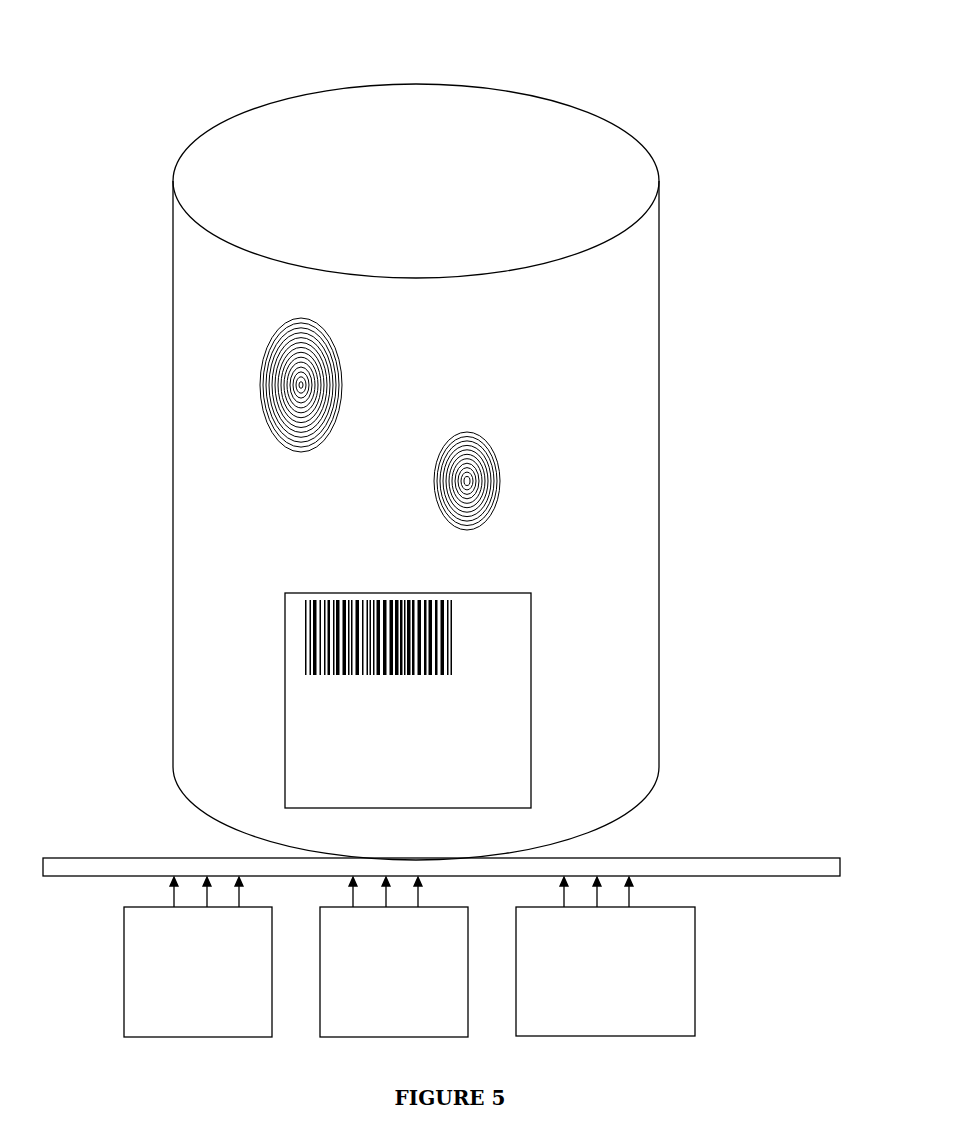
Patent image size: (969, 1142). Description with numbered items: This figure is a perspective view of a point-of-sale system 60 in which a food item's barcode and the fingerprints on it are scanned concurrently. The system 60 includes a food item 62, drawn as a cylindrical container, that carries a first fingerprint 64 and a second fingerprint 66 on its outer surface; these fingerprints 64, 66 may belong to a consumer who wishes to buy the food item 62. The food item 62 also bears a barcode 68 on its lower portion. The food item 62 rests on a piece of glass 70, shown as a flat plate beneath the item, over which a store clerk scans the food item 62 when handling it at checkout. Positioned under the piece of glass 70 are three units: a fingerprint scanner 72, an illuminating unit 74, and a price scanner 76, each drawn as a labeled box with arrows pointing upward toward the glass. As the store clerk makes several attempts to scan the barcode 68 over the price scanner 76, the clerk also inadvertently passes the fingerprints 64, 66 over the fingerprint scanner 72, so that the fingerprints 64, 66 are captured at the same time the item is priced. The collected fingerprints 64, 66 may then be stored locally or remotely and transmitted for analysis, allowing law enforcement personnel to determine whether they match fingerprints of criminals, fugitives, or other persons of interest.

The system 60 is at (570, 67).
The food item 62 is at (642, 328).
The first fingerprint 64 is at (255, 389).
The second fingerprint 66 is at (498, 502).
The barcode 68 is at (308, 663).
The piece of glass 70 is at (710, 852).
The fingerprint scanner 72 is at (124, 952).
The illuminating unit 74 is at (338, 1013).
The price scanner 76 is at (697, 962).